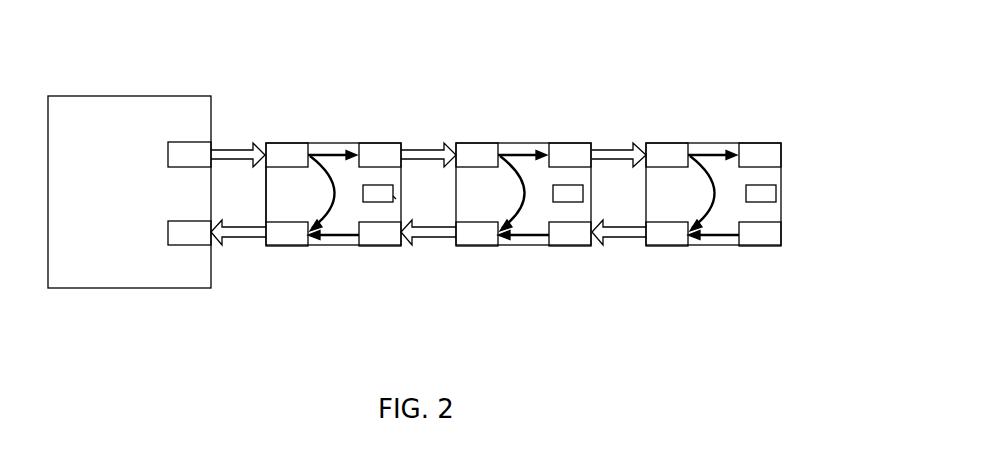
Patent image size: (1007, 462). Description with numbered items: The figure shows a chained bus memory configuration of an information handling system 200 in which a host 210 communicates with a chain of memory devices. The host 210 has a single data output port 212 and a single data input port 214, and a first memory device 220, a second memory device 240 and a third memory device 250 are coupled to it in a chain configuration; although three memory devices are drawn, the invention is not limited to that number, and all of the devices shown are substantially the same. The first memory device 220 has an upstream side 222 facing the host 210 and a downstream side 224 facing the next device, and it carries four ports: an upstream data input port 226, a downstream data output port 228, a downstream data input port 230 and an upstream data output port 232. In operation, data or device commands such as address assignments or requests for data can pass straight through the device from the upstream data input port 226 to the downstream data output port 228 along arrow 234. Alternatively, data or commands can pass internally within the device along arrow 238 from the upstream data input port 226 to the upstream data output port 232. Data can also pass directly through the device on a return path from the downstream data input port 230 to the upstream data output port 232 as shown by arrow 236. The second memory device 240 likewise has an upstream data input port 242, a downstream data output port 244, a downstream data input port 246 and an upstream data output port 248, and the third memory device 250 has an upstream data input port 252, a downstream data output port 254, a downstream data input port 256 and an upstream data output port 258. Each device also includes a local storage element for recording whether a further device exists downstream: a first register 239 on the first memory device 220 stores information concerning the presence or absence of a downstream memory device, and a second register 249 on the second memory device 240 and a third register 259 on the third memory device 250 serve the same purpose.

The information handling system 200 is at (255, 332).
The host 210 is at (127, 96).
The data output port 212 is at (167, 154).
The data input port 214 is at (167, 234).
The first memory device 220 is at (350, 181).
The upstream side 222 is at (263, 193).
The downstream side 224 is at (399, 193).
The upstream data input port 226 is at (288, 142).
The downstream data output port 228 is at (380, 143).
The downstream data input port 230 is at (377, 248).
The upstream data output port 232 is at (288, 245).
The arrow 234 is at (332, 150).
The arrow 236 is at (338, 236).
The arrow 238 is at (319, 145).
The first register 239 is at (394, 197).
The second memory device 240 is at (560, 189).
The upstream data input port 242 is at (480, 145).
The downstream data output port 244 is at (568, 143).
The downstream data input port 246 is at (570, 247).
The upstream data output port 248 is at (477, 248).
The second register 249 is at (585, 188).
The third memory device 250 is at (757, 190).
The upstream data input port 252 is at (668, 142).
The downstream data output port 254 is at (758, 147).
The downstream data input port 256 is at (760, 247).
The upstream data output port 258 is at (665, 248).
The third register 259 is at (777, 192).